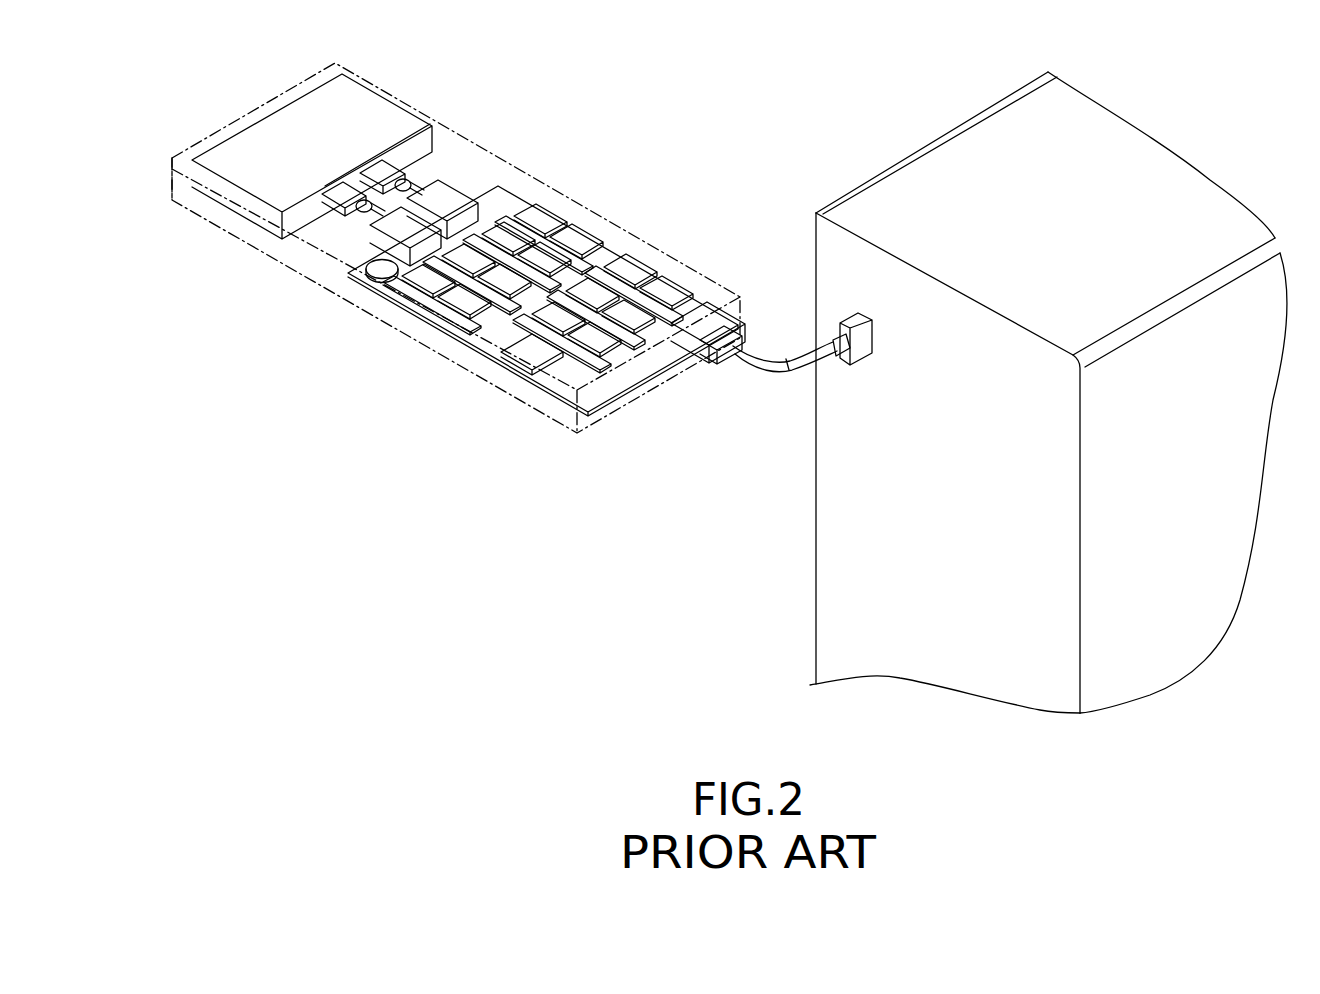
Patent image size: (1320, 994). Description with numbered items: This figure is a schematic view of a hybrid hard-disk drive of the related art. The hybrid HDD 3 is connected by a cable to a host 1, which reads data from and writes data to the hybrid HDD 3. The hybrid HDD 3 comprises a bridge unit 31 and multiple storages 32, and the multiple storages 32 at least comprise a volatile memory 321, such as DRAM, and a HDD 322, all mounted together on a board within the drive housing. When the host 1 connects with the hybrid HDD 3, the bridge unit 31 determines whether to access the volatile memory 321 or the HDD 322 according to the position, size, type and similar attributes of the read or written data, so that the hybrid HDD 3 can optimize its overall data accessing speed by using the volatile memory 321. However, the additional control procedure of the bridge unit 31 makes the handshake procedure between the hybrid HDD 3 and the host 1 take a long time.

The host 1 is at (962, 147).
The hybrid HDD 3 is at (250, 120).
The bridge unit 31 is at (525, 355).
The multiple storages 32 is at (462, 42).
The volatile memory 321 is at (575, 242).
The HDD 322 is at (373, 108).